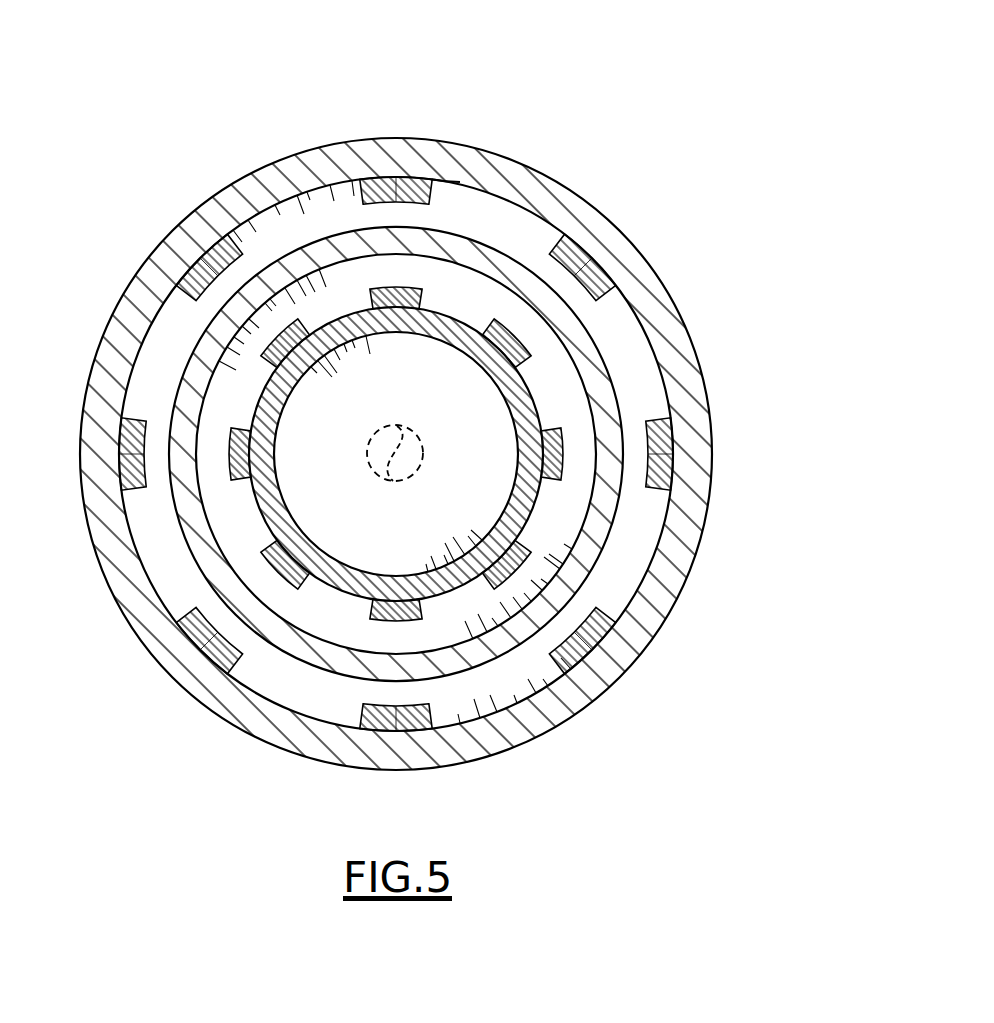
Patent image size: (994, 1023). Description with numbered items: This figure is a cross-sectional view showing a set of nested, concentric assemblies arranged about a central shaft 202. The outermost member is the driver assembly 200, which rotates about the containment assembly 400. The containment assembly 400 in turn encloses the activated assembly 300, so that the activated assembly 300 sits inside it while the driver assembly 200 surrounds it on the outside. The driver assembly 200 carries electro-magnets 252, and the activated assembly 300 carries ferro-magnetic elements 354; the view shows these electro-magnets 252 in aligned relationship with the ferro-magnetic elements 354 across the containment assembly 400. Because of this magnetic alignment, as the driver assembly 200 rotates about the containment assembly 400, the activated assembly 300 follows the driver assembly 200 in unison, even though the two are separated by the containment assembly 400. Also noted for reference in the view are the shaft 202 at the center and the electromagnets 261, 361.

The driver assembly 200 is at (525, 162).
The electro-magnets 252 is at (402, 182).
The electromagnet 261 is at (432, 180).
The activated assembly 300 is at (543, 392).
The containment assembly 400 is at (610, 537).
The ferro-magnetic elements 354 is at (230, 460).
The electromagnet 361 is at (429, 622).
The shaft 202 is at (388, 438).